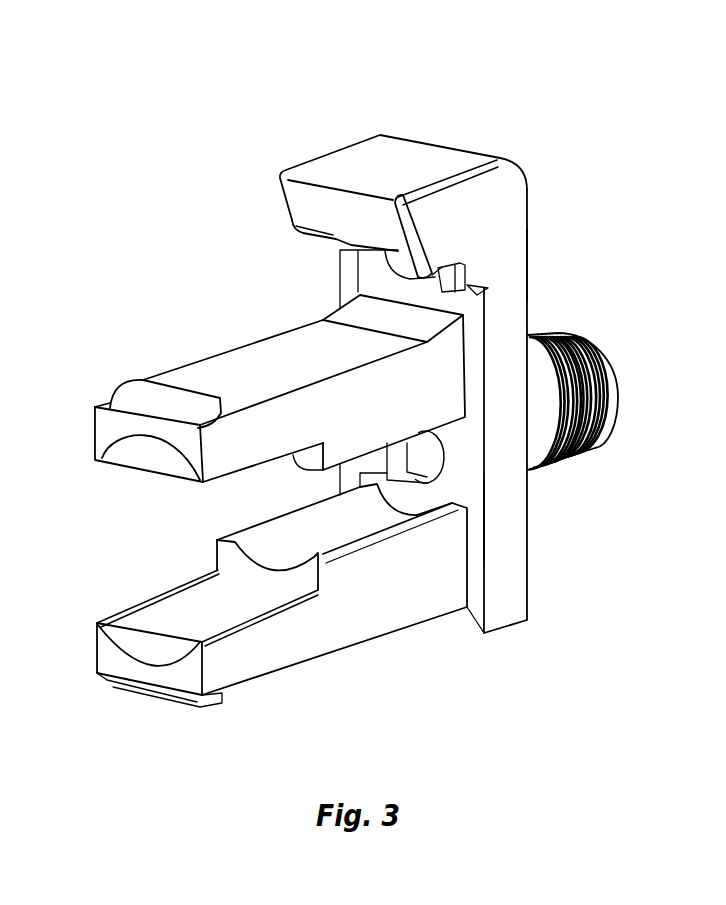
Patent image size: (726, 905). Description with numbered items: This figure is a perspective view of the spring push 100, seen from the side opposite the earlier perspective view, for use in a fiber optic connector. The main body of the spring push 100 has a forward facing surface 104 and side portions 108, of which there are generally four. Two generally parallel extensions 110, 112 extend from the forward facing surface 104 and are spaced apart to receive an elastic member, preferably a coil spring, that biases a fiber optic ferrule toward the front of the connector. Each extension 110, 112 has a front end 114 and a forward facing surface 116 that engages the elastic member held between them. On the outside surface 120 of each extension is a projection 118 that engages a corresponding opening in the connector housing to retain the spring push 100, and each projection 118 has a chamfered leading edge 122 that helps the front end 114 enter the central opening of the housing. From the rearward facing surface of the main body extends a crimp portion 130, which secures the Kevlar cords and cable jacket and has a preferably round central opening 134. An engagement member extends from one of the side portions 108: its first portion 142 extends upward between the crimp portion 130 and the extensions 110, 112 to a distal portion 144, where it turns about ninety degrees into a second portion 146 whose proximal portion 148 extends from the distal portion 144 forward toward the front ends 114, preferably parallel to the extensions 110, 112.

The spring push 100 is at (389, 100).
The forward facing surface 104 is at (475, 620).
The side portions 108 is at (513, 531).
The generally parallel extension 110 is at (315, 633).
The generally parallel extension 112 is at (375, 423).
The front end 114 is at (103, 428).
The forward facing surface 116 is at (228, 565).
The projection 118 is at (148, 388).
The outside surface 120 is at (227, 370).
The chamfered leading edge 122 is at (100, 408).
The crimp portion 130 is at (613, 370).
The central opening 134 is at (432, 459).
The first portion 142 is at (507, 266).
The distal portion 144 is at (520, 201).
The second portion 146 is at (435, 206).
The proximal portion 148 is at (381, 146).